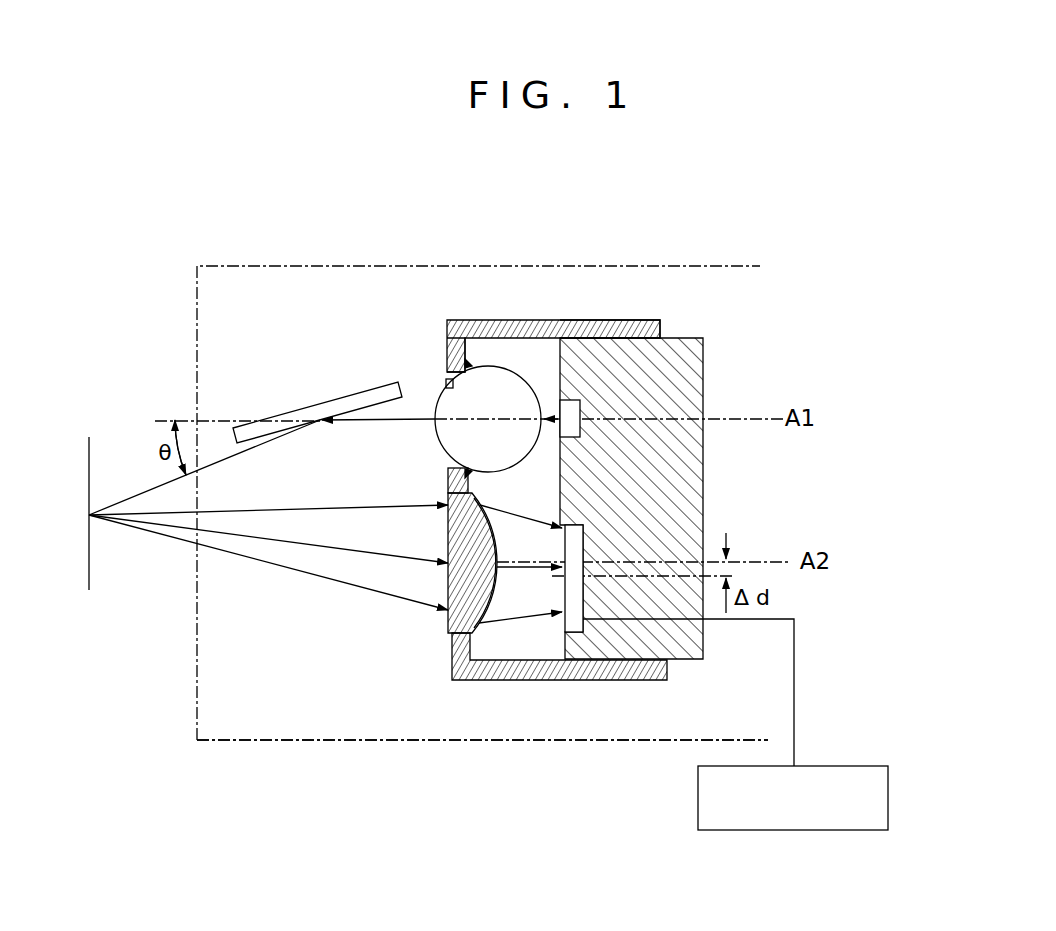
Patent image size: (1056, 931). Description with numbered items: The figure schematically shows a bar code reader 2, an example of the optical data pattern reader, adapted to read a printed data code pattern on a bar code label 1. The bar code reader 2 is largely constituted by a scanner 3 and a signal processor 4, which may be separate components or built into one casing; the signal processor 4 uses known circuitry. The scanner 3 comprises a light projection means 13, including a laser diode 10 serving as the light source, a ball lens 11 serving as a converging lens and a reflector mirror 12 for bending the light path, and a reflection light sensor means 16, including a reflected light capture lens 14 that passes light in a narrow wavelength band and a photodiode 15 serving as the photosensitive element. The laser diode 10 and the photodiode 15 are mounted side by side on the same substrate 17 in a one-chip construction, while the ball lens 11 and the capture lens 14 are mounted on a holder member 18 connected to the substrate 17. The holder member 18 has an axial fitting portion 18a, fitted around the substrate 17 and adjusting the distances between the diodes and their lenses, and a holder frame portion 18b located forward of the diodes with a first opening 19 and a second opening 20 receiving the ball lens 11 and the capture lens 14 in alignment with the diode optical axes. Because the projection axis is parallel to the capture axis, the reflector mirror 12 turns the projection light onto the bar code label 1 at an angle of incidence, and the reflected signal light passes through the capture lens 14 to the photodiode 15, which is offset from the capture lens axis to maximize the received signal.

The bar code label 1 is at (90, 572).
The bar code reader 2 is at (730, 235).
The scanner 3 is at (268, 740).
The signal processor 4 is at (888, 792).
The laser diode 10 is at (578, 408).
The ball lens 11 is at (503, 377).
The reflector mirror 12 is at (307, 410).
The light projection means 13 is at (535, 368).
The reflected light capture lens 14 is at (447, 592).
The photodiode 15 is at (577, 625).
The reflection light sensor means 16 is at (510, 637).
The substrate 17 is at (703, 487).
The holder member 18 is at (472, 318).
The axial fitting portion 18a is at (628, 320).
The holder frame portion 18b is at (447, 346).
The first opening 19 is at (447, 385).
The second opening 20 is at (447, 615).